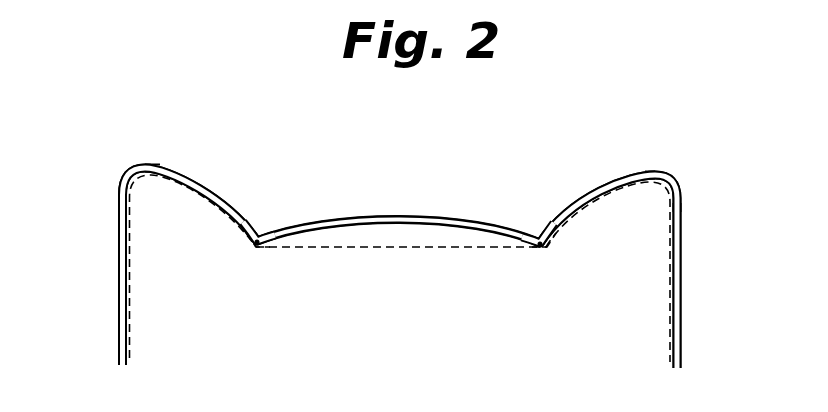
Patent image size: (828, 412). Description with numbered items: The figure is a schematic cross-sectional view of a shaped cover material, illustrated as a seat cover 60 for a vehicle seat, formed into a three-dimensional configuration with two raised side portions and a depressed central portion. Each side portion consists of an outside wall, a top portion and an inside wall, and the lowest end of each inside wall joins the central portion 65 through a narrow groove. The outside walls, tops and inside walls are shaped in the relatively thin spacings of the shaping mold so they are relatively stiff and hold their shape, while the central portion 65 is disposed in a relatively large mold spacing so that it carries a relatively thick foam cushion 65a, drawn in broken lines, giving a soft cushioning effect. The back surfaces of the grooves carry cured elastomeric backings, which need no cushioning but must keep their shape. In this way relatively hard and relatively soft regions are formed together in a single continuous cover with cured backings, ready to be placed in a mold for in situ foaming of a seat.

The seat cover 60 is at (667, 170).
The central portion 65 is at (415, 215).
The foam cushion 65a is at (355, 249).